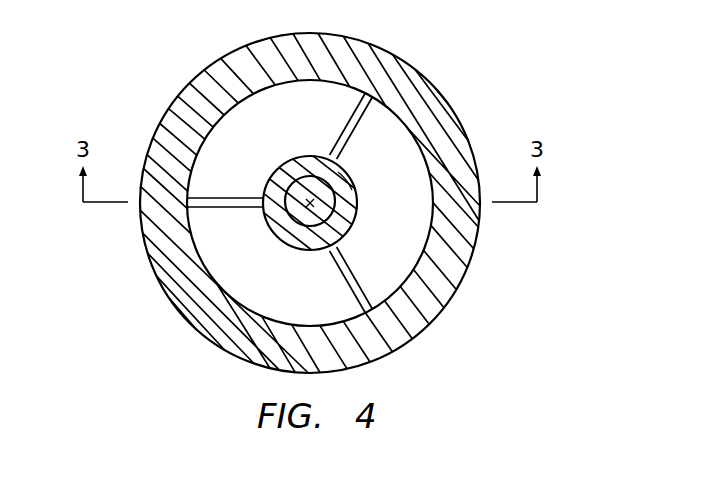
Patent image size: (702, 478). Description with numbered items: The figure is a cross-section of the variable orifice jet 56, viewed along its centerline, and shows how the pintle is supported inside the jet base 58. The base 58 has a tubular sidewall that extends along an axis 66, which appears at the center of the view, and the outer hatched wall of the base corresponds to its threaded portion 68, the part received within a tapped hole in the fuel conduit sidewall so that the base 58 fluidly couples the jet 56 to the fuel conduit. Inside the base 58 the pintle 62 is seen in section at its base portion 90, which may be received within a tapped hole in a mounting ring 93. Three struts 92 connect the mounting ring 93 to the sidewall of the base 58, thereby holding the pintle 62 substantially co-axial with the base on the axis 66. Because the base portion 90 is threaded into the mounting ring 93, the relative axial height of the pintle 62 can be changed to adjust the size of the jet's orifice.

The variable orifice jet 56 is at (518, 85).
The jet base 58 is at (310, 203).
The pintle 62 is at (290, 175).
The axis 66 is at (309, 207).
The threaded portion 68 is at (405, 63).
The base portion 90 is at (357, 203).
The struts 92 is at (354, 123).
The mounting ring 93 is at (342, 183).